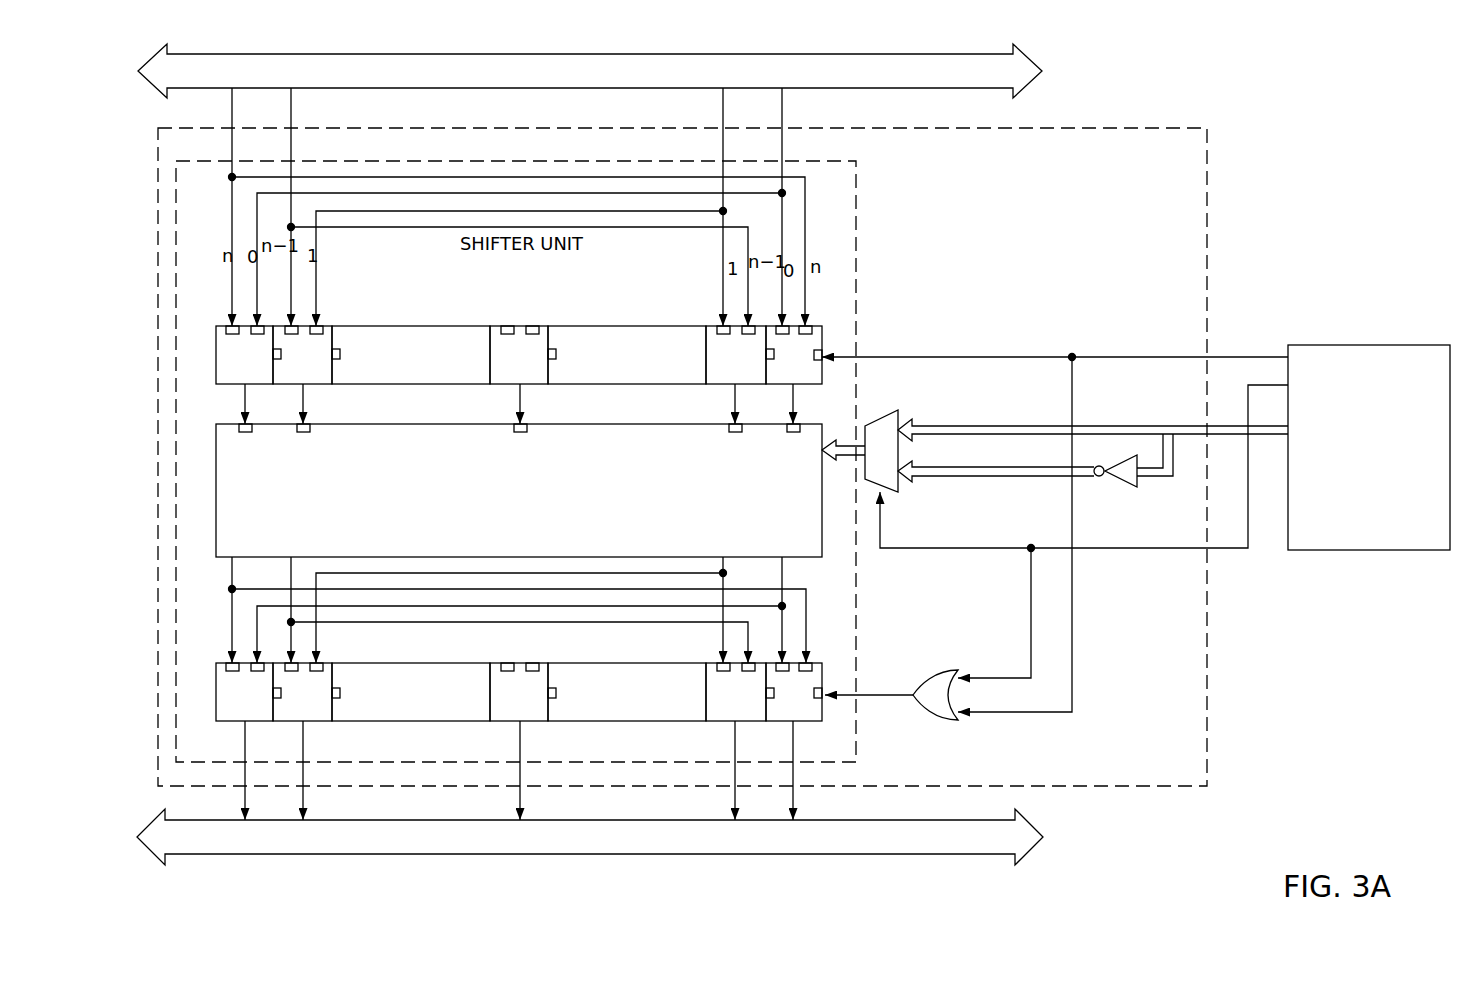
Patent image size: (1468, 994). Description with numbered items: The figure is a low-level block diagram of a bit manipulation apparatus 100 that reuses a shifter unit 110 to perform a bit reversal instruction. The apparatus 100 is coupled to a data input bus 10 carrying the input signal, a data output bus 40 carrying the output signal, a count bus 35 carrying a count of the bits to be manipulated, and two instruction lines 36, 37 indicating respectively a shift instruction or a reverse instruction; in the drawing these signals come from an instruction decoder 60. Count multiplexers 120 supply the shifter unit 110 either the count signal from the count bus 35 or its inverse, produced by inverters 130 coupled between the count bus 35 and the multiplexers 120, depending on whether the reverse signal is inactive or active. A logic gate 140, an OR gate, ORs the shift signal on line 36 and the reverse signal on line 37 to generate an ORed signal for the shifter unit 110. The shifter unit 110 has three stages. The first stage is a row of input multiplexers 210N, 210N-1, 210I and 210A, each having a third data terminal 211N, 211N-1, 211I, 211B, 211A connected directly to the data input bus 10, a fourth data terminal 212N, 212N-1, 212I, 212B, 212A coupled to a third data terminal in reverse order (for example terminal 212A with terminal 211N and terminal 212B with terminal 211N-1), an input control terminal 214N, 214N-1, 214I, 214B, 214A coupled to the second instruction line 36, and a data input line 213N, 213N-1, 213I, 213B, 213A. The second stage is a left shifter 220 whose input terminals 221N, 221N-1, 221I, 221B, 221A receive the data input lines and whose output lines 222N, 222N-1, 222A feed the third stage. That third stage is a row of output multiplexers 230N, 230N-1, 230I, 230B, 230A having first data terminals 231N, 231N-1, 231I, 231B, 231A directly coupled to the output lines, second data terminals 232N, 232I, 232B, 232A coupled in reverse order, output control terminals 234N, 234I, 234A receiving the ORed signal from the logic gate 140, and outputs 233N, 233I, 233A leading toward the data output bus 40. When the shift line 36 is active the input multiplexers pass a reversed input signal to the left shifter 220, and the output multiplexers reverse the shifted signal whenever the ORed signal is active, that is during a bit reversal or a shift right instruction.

The data input bus 10 is at (907, 88).
The data output bus 40 is at (928, 854).
The bit manipulation apparatus 100 is at (1205, 159).
The shifter unit 110 is at (853, 192).
The instruction decoder 60 is at (1359, 488).
The second instruction line 36 is at (1236, 355).
The count bus 35 is at (1225, 425).
The first instruction line 37 is at (1265, 386).
The count multiplexer 120 is at (880, 417).
The inverter 130 is at (1125, 480).
The logic gate 140 is at (942, 720).
The input multiplexer 210N is at (217, 373).
The input multiplexer 210N-1 is at (322, 371).
The input multiplexer 210I is at (500, 360).
The input multiplexer 210A is at (818, 388).
The third data terminal 211N is at (225, 330).
The fourth data terminal 212N is at (250, 322).
The third data terminal 211N-1 is at (299, 322).
The fourth data terminal 212N-1 is at (322, 324).
The third data terminal 211I is at (505, 324).
The fourth data terminal 212I is at (533, 324).
The third data terminal 211B is at (712, 340).
The fourth data terminal 212B is at (716, 322).
The third data terminal 211A is at (778, 338).
The fourth data terminal 212A is at (800, 324).
The input control terminal 214N is at (271, 357).
The input control terminal 214N-1 is at (340, 353).
The input control terminal 214I is at (557, 351).
The input control terminal 214B is at (764, 356).
The input control terminal 214A is at (826, 352).
The data input line 213N is at (246, 392).
The data input line 213N-1 is at (304, 392).
The data input line 213I is at (523, 400).
The data input line 213B is at (733, 400).
The data input line 213A is at (791, 402).
The left shifter 220 is at (434, 432).
The input terminal 221N is at (245, 433).
The input terminal 221N-1 is at (303, 433).
The input terminal 221I is at (520, 433).
The input terminal 221B is at (735, 433).
The input terminal 221A is at (793, 433).
The output line 222N is at (230, 562).
The output line 222N-1 is at (290, 572).
The output line 222A is at (786, 576).
The output multiplexer 230N is at (233, 722).
The output multiplexer 230N-1 is at (310, 712).
The output multiplexer 230I is at (540, 706).
The output multiplexer 230B is at (712, 680).
The output multiplexer 230A is at (810, 723).
The first data terminal 231N is at (222, 672).
The second data terminal 232N is at (253, 660).
The first data terminal 231N-1 is at (303, 660).
The first data terminal 231I is at (507, 662).
The second data terminal 232I is at (533, 662).
The first data terminal 231B is at (718, 662).
The second data terminal 232B is at (748, 673).
The first data terminal 231A is at (780, 673).
The second data terminal 232A is at (812, 662).
The output control terminal 234N is at (271, 697).
The output control terminal 234I is at (557, 694).
The output control terminal 234A is at (822, 698).
The output of second unit cell N 233N is at (275, 732).
The output of second unit cell I 233I is at (523, 741).
The output of second unit cell A 233A is at (790, 732).